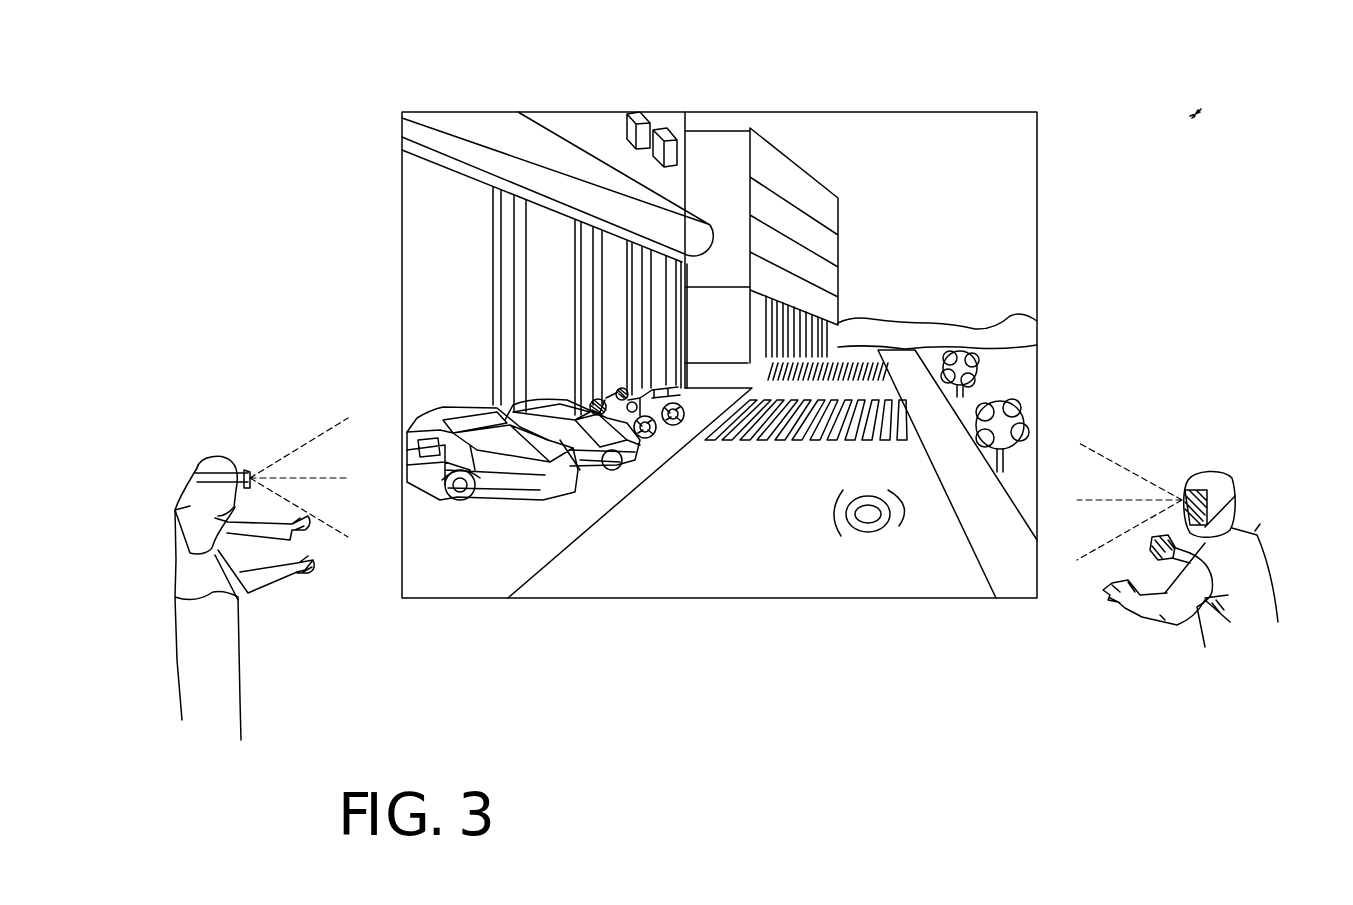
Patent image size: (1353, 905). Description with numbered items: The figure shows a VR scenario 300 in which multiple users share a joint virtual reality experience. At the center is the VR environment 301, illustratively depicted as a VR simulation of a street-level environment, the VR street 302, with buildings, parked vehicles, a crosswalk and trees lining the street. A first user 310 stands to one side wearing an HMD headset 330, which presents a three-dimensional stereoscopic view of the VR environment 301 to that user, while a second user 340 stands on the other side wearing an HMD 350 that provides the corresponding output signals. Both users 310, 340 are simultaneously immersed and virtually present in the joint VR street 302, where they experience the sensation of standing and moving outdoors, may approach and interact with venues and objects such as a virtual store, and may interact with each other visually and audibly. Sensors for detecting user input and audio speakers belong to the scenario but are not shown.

The VR scenario 300 is at (1223, 91).
The VR environment 301 is at (731, 327).
The VR street 302 is at (480, 403).
The first user 310 is at (1213, 559).
The HMD headset 330 is at (1182, 500).
The second user 340 is at (214, 598).
The HMD 350 is at (247, 475).